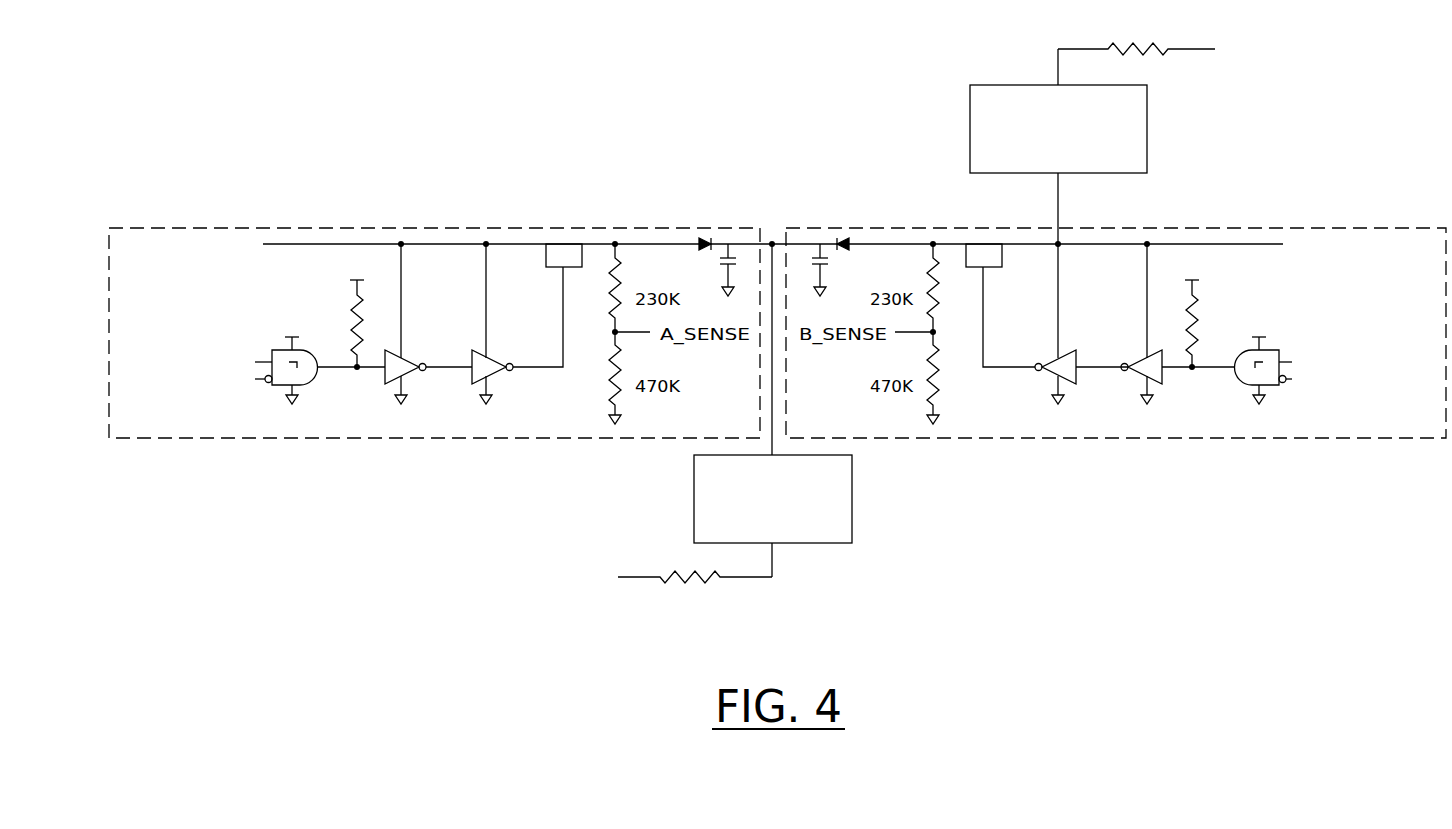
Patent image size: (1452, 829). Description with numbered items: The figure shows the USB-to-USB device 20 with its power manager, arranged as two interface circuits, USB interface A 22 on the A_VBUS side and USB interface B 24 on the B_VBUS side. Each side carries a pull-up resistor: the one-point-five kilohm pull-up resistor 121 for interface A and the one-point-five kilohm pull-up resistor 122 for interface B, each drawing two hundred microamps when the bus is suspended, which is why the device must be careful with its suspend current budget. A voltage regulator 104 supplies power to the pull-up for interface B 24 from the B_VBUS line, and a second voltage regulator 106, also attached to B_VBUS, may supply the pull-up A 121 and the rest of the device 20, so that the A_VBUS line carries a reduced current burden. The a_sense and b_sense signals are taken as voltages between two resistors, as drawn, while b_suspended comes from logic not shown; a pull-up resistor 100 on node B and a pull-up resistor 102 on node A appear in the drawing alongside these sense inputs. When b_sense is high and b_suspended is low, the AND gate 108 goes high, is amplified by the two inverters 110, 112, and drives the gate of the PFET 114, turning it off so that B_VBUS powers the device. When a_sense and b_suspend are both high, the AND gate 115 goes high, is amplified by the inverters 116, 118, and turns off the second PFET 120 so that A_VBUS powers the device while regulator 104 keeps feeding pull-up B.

The USB-to-USB device 20 is at (429, 217).
The USB interface A 22 is at (207, 228).
The USB interface B 24 is at (888, 228).
The pull-up resistor at node B 100 is at (356, 318).
The pull-up resistor at node A 102 is at (1194, 318).
The voltage regulator 104 is at (998, 85).
The second voltage regulator 106 is at (815, 543).
The AND gate 108 is at (300, 386).
The inverter 110 is at (408, 374).
The inverter 112 is at (493, 374).
The p-type field effect transistor (PFET) 114 is at (557, 268).
The AND gate 115 is at (1248, 386).
The inverter 116 is at (1142, 376).
The inverter 118 is at (1057, 376).
The second PFET 120 is at (992, 268).
The 1.5 k pull-up resistor 121 is at (1144, 44).
The 1.5 k pull-up resistor 122 is at (710, 582).